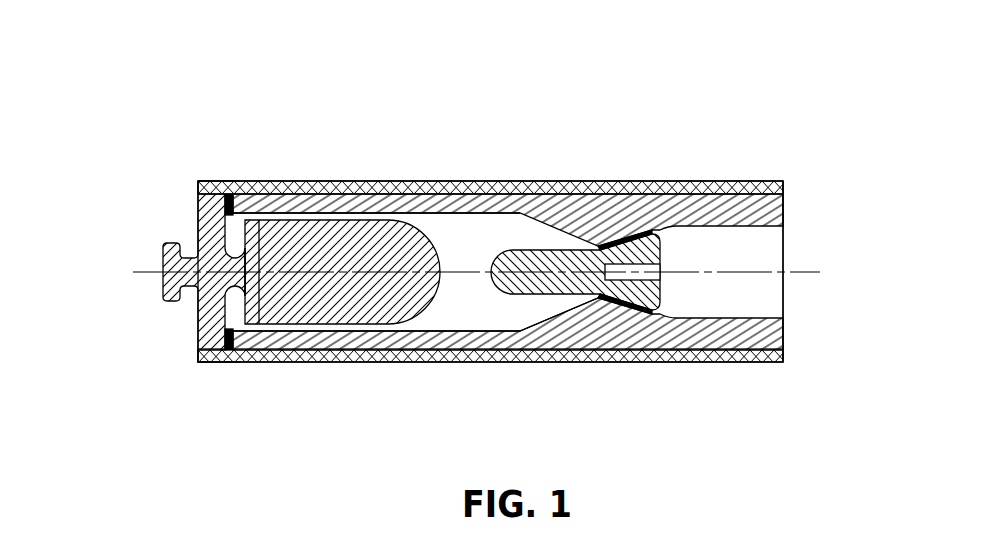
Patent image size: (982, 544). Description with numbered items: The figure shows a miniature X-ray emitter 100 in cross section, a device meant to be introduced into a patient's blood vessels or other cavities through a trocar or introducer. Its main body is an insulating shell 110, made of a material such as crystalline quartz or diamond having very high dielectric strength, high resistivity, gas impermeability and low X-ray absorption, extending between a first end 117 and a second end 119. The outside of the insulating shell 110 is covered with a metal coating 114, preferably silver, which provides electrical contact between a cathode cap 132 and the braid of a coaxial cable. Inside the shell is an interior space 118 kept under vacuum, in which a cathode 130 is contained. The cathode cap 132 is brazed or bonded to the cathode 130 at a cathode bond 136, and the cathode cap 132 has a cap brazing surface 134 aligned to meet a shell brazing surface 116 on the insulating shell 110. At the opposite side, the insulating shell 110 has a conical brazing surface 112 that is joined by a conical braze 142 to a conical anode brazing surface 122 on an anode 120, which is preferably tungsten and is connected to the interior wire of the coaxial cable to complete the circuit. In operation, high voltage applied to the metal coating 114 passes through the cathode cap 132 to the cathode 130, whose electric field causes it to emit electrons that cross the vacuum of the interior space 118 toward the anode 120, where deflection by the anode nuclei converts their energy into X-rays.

The miniature X-ray emitter 100 is at (765, 147).
The insulating shell 110 is at (763, 338).
The conical brazing surface 112 is at (603, 297).
The metal coating 114 is at (468, 182).
The shell brazing surface 116 is at (230, 338).
The first end 117 is at (783, 178).
The interior space 118 is at (497, 232).
The second end 119 is at (200, 365).
The anode 120 is at (563, 286).
The conical anode brazing surface 122 is at (660, 278).
The cathode 130 is at (333, 242).
The cathode cap 132 is at (210, 333).
The cap brazing surface 134 is at (213, 183).
The cathode bond 136 is at (259, 264).
The conical braze 142 is at (633, 228).